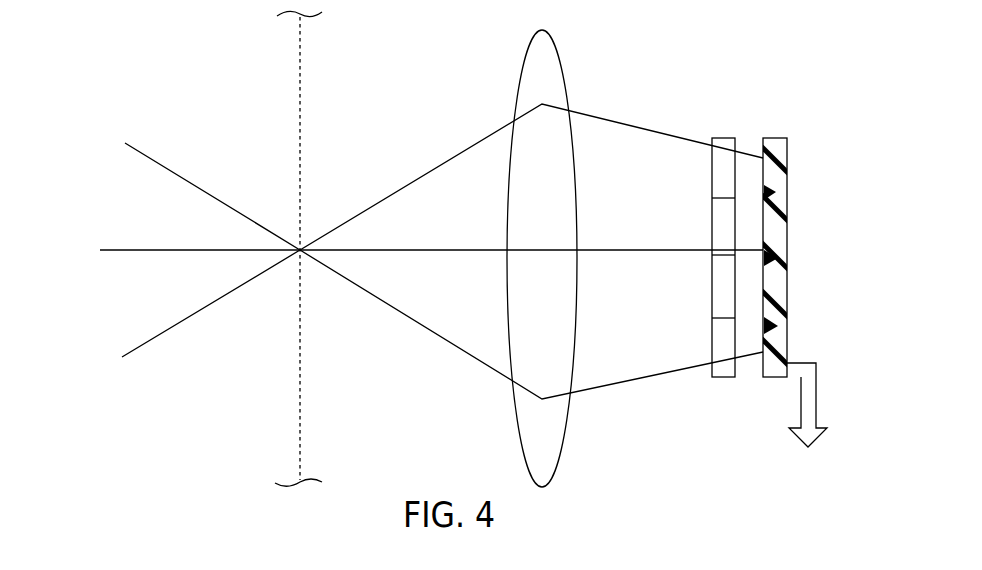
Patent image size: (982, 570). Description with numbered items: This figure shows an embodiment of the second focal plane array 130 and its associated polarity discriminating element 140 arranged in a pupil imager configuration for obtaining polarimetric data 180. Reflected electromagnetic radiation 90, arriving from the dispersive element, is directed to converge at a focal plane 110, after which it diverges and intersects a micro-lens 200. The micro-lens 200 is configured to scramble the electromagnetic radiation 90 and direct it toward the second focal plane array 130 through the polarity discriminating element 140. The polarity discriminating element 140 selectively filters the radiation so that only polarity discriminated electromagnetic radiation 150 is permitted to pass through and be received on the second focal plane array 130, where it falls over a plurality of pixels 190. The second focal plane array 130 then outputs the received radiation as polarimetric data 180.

The reflected electromagnetic radiation 90 is at (216, 300).
The focal plane 110 is at (303, 55).
The micro-lens 200 is at (557, 47).
The polarity discriminating element 140 is at (720, 138).
The second focal plane array 130 is at (773, 132).
The polarity discriminated electromagnetic radiation 150 is at (752, 168).
The pixels 190 is at (780, 223).
The polarimetric data 180 is at (818, 391).